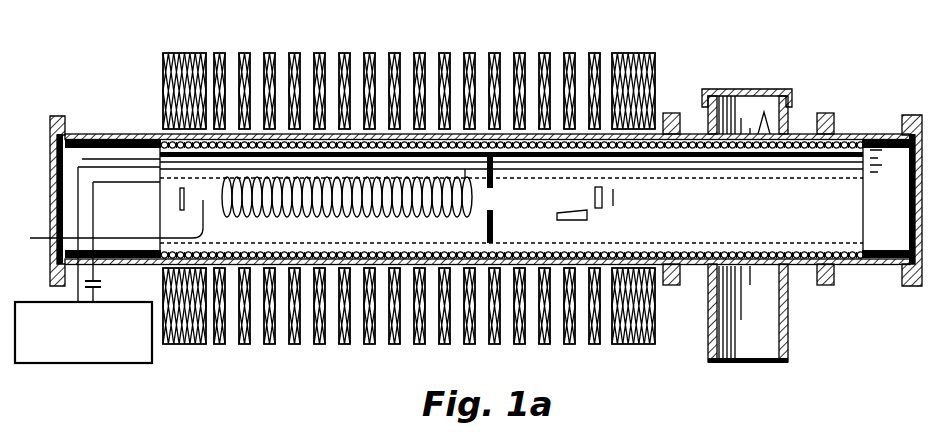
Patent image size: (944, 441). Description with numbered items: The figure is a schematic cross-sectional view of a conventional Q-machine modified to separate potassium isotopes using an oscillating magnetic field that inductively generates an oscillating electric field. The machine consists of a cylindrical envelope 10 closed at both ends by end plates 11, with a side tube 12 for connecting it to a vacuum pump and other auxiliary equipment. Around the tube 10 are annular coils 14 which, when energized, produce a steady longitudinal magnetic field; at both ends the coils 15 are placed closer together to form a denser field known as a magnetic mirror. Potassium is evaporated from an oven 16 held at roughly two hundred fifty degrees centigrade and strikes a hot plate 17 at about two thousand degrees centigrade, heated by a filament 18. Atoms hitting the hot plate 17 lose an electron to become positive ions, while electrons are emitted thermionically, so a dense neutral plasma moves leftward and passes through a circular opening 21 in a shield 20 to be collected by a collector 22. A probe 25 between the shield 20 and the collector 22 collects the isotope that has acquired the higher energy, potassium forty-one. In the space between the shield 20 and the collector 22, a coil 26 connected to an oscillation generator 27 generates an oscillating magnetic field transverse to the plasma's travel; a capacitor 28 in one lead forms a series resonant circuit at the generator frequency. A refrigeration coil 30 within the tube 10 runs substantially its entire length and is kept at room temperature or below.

The cylindrical envelope 10 is at (103, 133).
The end plates 11 is at (51, 115).
The side tube 12 is at (790, 325).
The coils 14 is at (568, 53).
The end coils 15 is at (163, 60).
The oven 16 is at (587, 217).
The hot plate 17 is at (594, 196).
The filament 18 is at (614, 197).
The shield 20 is at (494, 226).
The circular opening 21 is at (493, 186).
The collector 22 is at (178, 199).
The probe 25 is at (198, 218).
The coil 26 is at (346, 218).
The oscillation generator 27 is at (89, 365).
The capacitor 28 is at (102, 288).
The refrigeration coil 30 is at (764, 112).